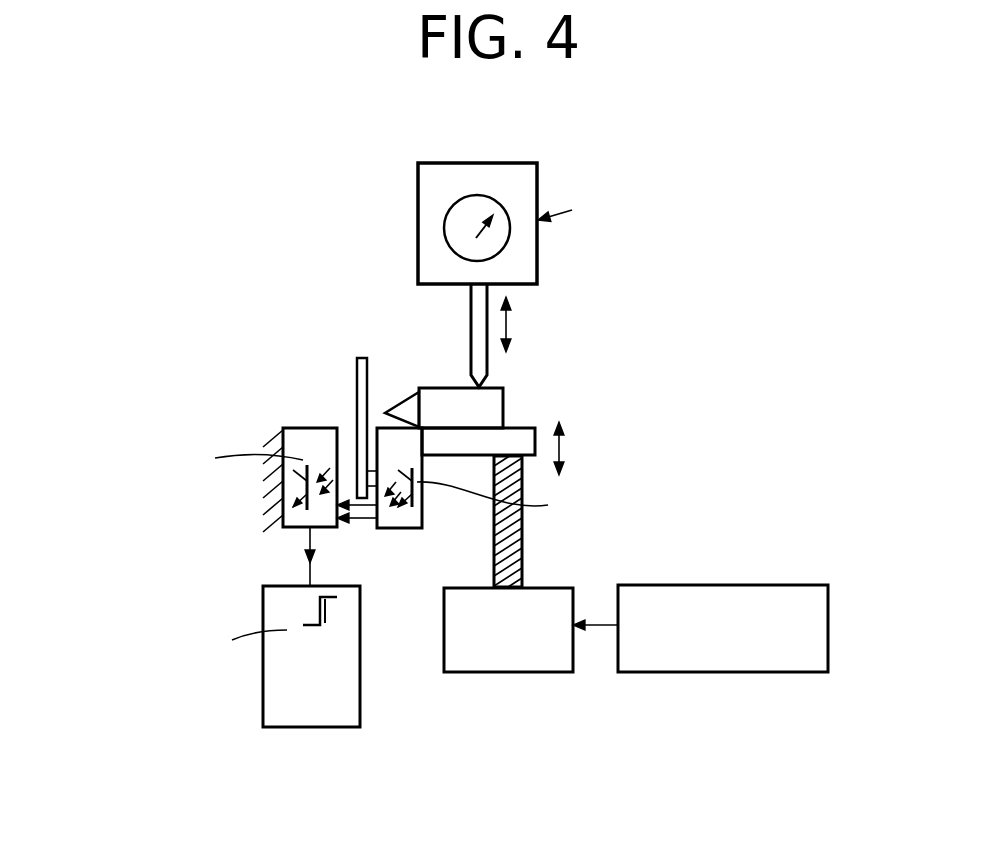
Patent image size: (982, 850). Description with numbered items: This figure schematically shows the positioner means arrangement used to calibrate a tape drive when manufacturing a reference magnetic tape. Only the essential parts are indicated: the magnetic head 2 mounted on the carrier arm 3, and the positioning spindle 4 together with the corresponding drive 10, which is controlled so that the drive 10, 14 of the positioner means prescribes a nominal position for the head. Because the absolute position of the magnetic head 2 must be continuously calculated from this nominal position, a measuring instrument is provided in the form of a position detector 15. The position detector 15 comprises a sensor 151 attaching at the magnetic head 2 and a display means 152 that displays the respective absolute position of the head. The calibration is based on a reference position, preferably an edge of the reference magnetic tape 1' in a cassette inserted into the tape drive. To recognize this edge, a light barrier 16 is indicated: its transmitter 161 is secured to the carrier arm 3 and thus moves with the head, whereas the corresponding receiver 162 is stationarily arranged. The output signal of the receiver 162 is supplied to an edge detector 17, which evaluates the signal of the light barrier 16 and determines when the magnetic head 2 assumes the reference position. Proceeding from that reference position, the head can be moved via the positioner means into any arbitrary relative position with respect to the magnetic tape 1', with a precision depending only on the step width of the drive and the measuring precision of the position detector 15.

The position detector 15 is at (574, 229).
The display means 152 is at (500, 238).
The sensor 151 is at (471, 313).
The magnetic head 2 is at (496, 396).
The carrier arm 3 is at (520, 438).
The positioning spindle 4 is at (523, 557).
The reference magnetic tape 1' is at (353, 415).
The light barrier 16 is at (411, 490).
The receiver 162 is at (318, 438).
The transmitter 161 is at (403, 528).
The edge detector 17 is at (277, 700).
The drive 10 is at (520, 662).
The drive (motor controller) 14 is at (677, 672).